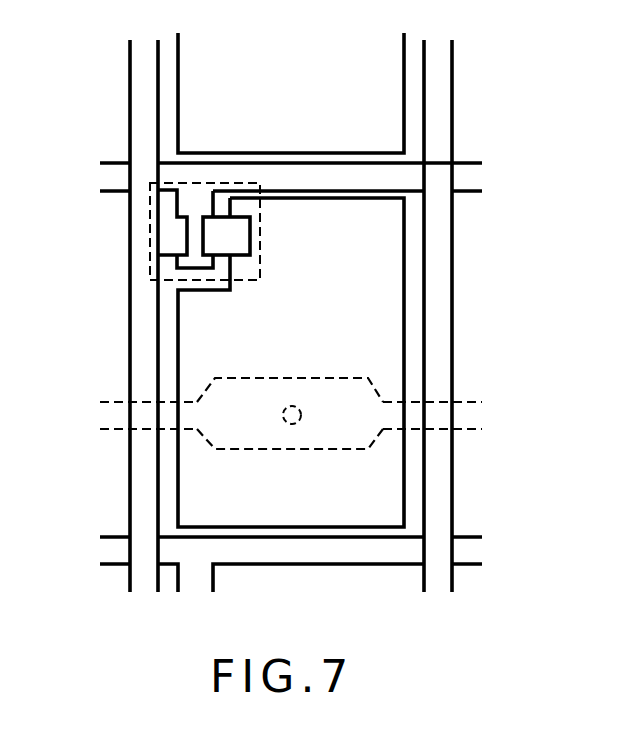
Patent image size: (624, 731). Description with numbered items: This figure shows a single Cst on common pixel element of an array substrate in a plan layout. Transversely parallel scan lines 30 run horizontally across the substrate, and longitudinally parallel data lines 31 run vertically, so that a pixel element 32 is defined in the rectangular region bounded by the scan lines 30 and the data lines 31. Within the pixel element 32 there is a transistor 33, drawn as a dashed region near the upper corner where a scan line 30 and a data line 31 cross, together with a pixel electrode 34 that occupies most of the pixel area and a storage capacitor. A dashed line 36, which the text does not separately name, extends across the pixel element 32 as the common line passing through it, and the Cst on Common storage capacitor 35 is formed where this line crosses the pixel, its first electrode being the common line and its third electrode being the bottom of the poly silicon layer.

The scan line 30 is at (107, 181).
The data line 31 is at (145, 50).
The pixel element 32 is at (405, 232).
The transistor 33 is at (150, 250).
The pixel electrode 34 is at (306, 333).
The Cst on Common storage capacitor 35 is at (383, 440).
The storage line 36 is at (107, 417).